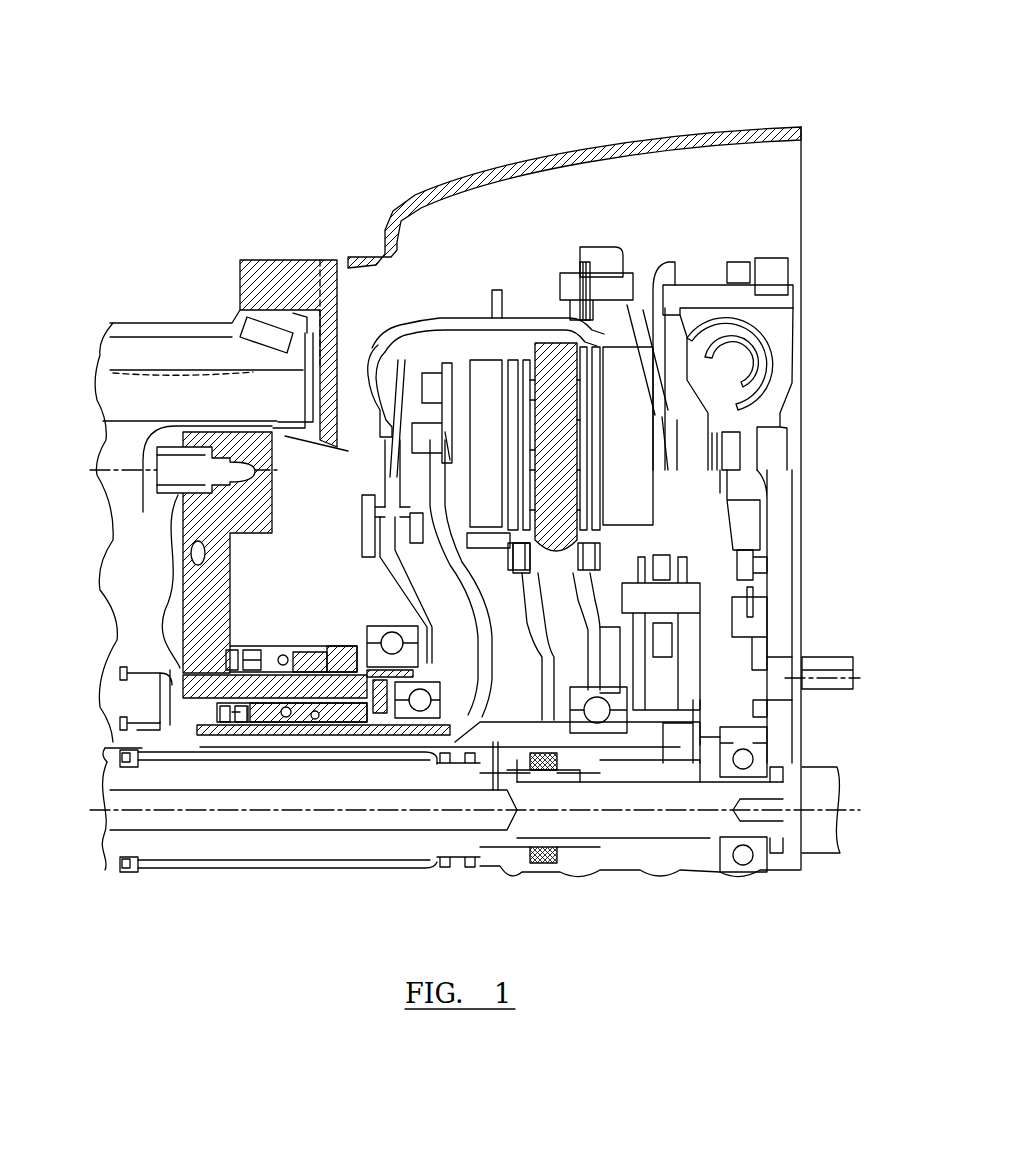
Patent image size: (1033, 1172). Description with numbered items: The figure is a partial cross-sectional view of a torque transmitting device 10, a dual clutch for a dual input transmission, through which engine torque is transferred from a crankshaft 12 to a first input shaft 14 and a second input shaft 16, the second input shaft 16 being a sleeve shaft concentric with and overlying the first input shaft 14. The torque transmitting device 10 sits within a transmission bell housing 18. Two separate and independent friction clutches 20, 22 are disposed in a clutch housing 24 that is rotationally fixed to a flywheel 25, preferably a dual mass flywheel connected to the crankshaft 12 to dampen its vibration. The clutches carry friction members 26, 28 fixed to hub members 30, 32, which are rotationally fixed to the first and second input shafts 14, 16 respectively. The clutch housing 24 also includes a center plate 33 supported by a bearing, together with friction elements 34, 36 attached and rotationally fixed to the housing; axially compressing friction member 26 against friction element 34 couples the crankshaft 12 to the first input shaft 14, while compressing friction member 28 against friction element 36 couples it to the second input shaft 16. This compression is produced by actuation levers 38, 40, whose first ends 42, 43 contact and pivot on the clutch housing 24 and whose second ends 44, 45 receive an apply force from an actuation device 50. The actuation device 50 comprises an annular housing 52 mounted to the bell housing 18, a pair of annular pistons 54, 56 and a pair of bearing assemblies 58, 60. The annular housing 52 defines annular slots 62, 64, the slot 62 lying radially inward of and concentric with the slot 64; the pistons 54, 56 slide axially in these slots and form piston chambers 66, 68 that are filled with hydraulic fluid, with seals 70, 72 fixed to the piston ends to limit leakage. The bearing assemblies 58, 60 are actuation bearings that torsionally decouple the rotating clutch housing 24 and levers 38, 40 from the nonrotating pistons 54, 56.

The torque transmitting device 10 is at (767, 74).
The crankshaft 12 is at (813, 835).
The first input shaft 14 is at (165, 848).
The second input shaft 16 is at (112, 745).
The bell housing 18 is at (344, 260).
The friction clutch 20 is at (632, 533).
The friction clutch 22 is at (523, 345).
The clutch housing 24 is at (457, 317).
The flywheel 25 is at (780, 407).
The friction member 26 is at (583, 300).
The friction member 28 is at (507, 532).
The hub member 30 is at (610, 650).
The hub member 32 is at (540, 648).
The center plate 33 is at (572, 467).
The friction element 34 is at (639, 491).
The friction element 36 is at (497, 491).
The actuation lever 38 is at (483, 653).
The actuation lever 40 is at (387, 573).
The first end 42 is at (463, 711).
The first end 43 is at (433, 650).
The second end 44 is at (390, 370).
The second end 45 is at (432, 473).
The actuation device 50 is at (281, 618).
The annular housing 52 is at (244, 521).
The annular piston 54 is at (266, 725).
The annular piston 56 is at (290, 652).
The bearing assembly 58 is at (393, 624).
The bearing assembly 60 is at (432, 737).
The annular slot 62 is at (223, 674).
The annular slot 64 is at (220, 725).
The piston chamber 66 is at (223, 653).
The piston chamber 68 is at (223, 704).
The seal 70 is at (236, 722).
The seal 72 is at (250, 652).